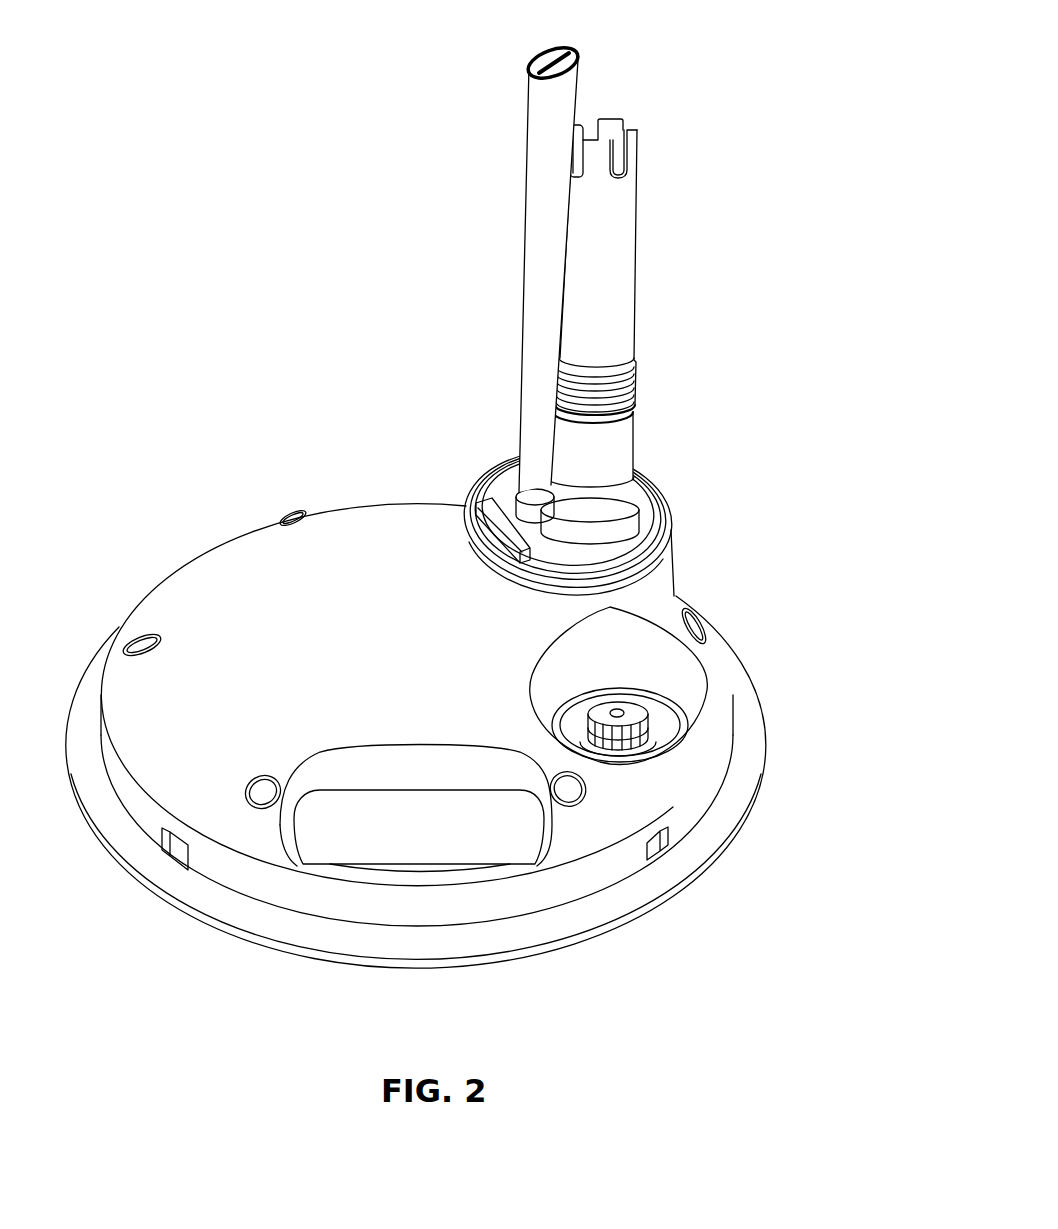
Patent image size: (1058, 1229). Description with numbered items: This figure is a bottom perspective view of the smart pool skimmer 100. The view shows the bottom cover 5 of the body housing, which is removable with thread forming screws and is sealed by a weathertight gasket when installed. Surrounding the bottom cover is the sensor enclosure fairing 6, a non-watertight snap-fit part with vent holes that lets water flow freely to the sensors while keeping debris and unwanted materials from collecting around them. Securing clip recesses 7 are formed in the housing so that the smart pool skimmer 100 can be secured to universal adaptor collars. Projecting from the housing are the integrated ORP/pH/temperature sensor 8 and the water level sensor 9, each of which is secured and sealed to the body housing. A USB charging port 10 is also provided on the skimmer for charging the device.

The smart pool skimmer 100 is at (803, 44).
The bottom cover 5 is at (681, 592).
The sensor enclosure fairing 6 is at (712, 880).
The securing clip recesses 7 is at (178, 860).
The integrated ORP/pH/temperature sensor 8 is at (627, 253).
The water level sensor 9 is at (570, 84).
The USB charging port 10 is at (636, 716).